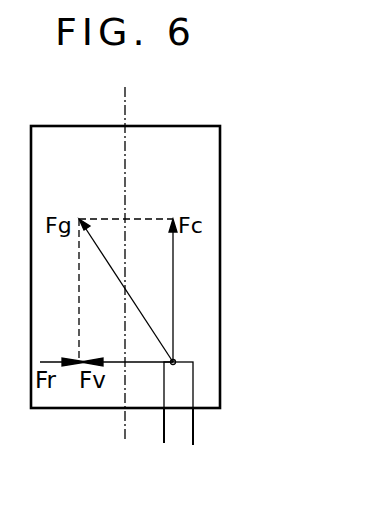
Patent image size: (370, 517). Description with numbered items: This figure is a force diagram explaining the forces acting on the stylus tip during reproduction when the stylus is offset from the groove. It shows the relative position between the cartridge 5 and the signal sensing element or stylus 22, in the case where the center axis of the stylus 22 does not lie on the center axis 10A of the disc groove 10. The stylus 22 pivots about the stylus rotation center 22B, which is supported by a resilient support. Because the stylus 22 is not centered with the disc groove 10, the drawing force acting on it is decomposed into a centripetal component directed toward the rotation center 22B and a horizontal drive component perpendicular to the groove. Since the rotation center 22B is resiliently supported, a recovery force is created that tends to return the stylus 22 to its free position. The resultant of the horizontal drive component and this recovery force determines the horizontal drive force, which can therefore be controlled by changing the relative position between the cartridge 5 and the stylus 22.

The cartridge 5 is at (208, 332).
The disc groove 10 is at (194, 437).
The center axis of the disc groove 10A is at (126, 101).
The signal sensing element 22 is at (180, 399).
The stylus rotation center 22B is at (175, 360).